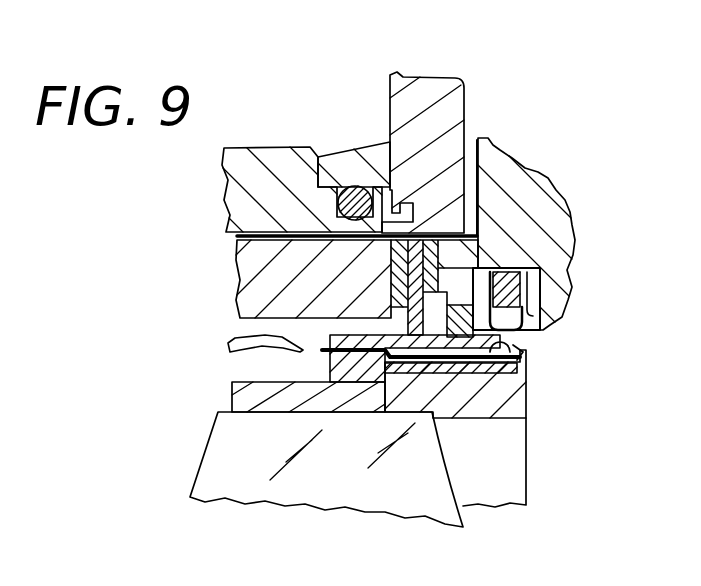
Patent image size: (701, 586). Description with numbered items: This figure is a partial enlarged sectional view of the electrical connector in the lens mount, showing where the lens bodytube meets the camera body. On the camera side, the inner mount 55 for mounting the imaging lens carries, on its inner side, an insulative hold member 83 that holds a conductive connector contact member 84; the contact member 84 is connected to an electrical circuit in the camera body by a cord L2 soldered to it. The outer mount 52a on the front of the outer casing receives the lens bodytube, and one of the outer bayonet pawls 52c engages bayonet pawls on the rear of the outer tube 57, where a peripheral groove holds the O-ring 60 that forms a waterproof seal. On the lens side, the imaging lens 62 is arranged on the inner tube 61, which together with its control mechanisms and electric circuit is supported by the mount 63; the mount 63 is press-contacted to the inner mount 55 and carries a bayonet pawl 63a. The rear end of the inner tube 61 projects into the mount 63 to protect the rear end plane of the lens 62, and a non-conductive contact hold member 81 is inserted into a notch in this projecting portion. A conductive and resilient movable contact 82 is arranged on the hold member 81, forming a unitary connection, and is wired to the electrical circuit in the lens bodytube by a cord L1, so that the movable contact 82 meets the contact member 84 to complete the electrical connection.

The outer mount 52a is at (362, 158).
The outer bayonet pawl 52c is at (397, 203).
The inner mount 55 is at (430, 237).
The outer tube 57 is at (258, 193).
The O-ring 60 is at (347, 187).
The inner tube 61 is at (243, 395).
The imaging lens 62 is at (223, 448).
The mount 63 is at (400, 277).
The bayonet pawl 63a is at (513, 323).
The contact hold member 81 is at (497, 383).
The movable contact 82 is at (517, 353).
The hold member 83 is at (520, 270).
The connector contact member 84 is at (543, 320).
The cord L1 is at (237, 343).
The cord L2 is at (545, 275).